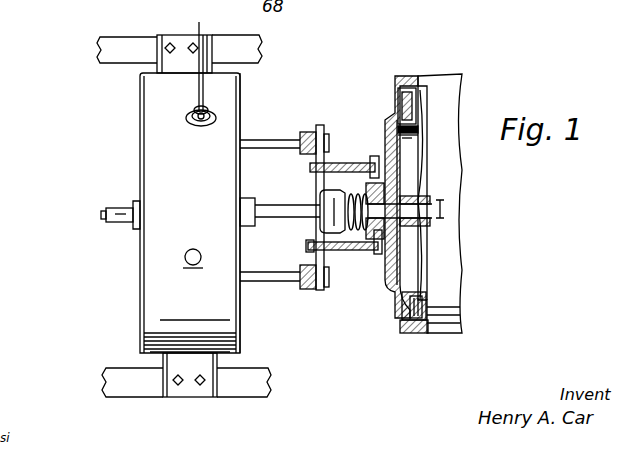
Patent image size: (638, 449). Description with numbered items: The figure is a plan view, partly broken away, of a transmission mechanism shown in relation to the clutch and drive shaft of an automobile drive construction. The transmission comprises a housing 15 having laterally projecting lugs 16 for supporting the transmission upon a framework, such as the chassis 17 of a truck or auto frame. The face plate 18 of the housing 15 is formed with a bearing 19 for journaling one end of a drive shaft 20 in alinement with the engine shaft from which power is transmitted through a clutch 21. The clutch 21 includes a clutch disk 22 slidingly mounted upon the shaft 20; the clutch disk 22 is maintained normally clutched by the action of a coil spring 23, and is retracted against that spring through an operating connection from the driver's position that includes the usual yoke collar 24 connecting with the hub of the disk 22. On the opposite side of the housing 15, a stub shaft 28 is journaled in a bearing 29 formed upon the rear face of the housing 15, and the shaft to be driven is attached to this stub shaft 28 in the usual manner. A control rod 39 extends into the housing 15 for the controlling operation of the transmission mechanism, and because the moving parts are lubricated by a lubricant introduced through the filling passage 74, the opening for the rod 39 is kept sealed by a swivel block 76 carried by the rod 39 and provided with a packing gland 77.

The housing 15 is at (138, 122).
The laterally projecting lugs 16 is at (172, 38).
The chassis 17 is at (259, 50).
The face plate 18 is at (241, 116).
The bearing 19 is at (252, 228).
The drive shaft 20 is at (282, 205).
The clutch 21 is at (415, 108).
The clutch disk 22 is at (386, 125).
The coil spring 23 is at (350, 240).
The yoke collar 24 is at (378, 258).
The stub shaft 28 is at (108, 208).
The bearing 29 is at (133, 226).
The control rod 39 is at (197, 56).
The filling passage 74 is at (190, 267).
The swivel block 76 is at (196, 127).
The packing gland 77 is at (194, 110).